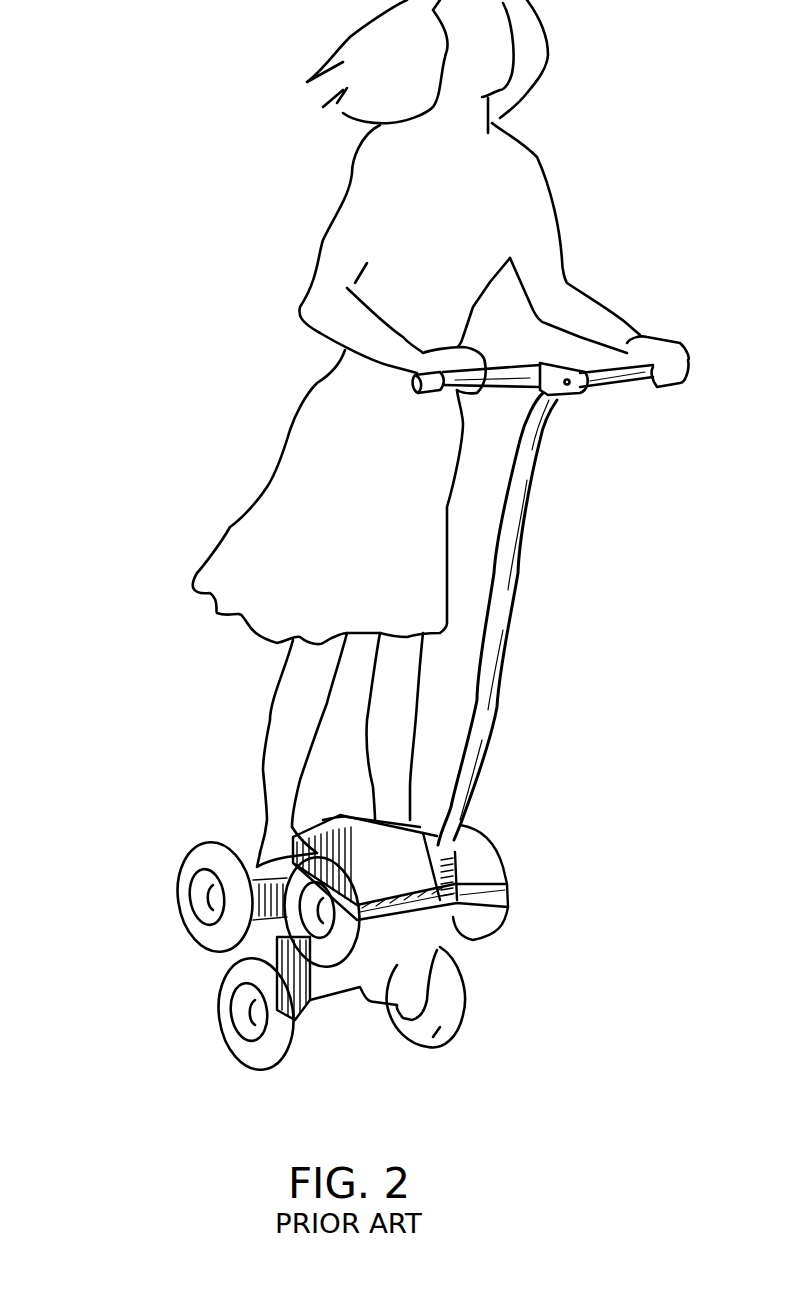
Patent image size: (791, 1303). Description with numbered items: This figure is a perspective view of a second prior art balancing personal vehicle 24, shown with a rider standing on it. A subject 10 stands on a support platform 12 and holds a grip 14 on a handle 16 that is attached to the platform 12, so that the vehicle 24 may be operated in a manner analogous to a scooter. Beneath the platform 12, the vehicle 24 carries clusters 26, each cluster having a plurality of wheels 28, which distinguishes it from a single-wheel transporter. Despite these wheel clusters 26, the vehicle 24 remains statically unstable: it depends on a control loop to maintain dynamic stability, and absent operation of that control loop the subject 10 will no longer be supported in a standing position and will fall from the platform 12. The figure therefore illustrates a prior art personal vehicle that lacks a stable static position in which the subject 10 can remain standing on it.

The subject 10 is at (528, 147).
The support platform 12 is at (510, 907).
The grip 14 is at (593, 400).
The handle 16 is at (517, 580).
The personal vehicle 24 is at (178, 446).
The clusters 26 is at (510, 963).
The wheels 28 is at (186, 853).